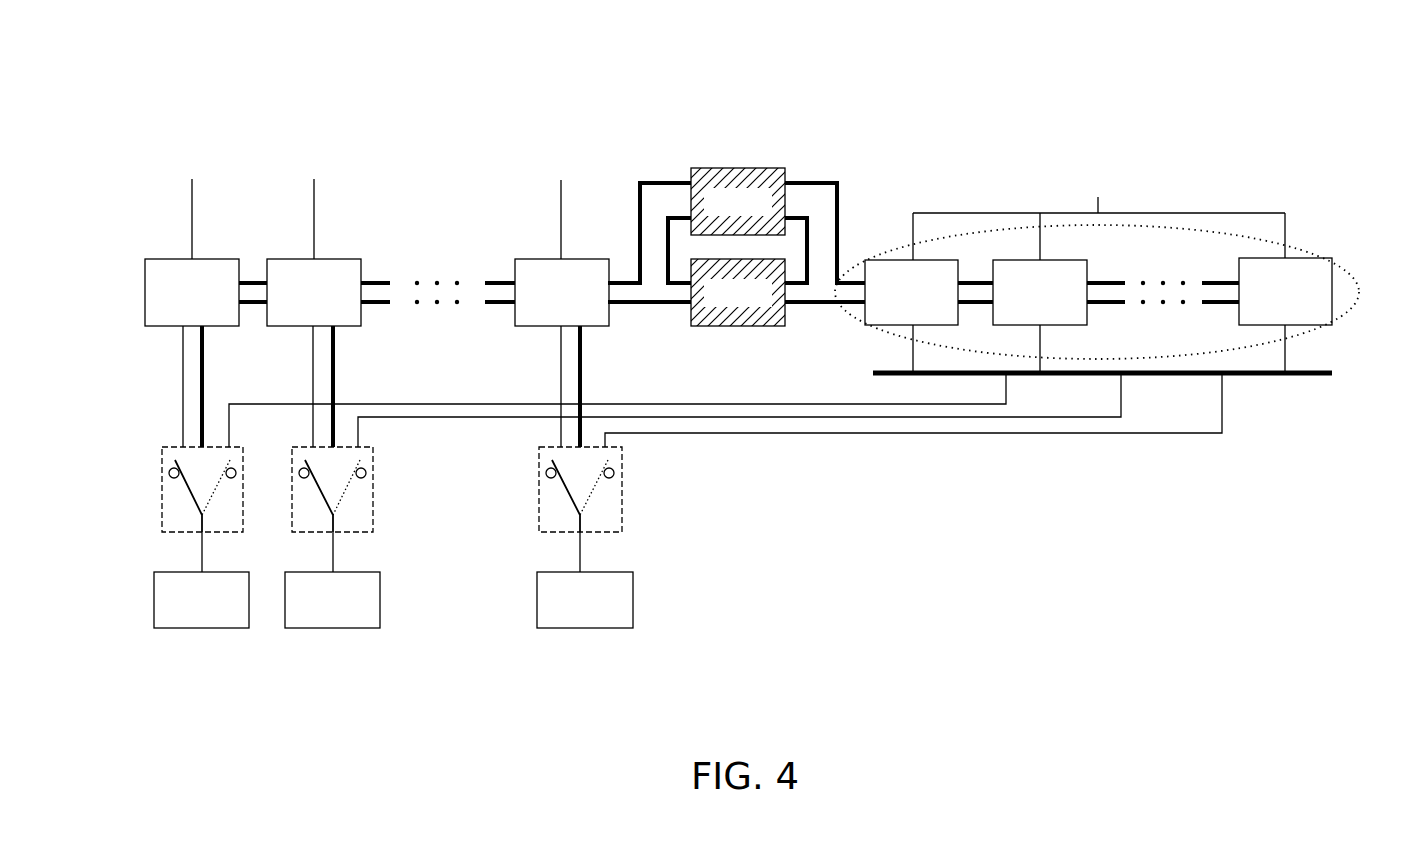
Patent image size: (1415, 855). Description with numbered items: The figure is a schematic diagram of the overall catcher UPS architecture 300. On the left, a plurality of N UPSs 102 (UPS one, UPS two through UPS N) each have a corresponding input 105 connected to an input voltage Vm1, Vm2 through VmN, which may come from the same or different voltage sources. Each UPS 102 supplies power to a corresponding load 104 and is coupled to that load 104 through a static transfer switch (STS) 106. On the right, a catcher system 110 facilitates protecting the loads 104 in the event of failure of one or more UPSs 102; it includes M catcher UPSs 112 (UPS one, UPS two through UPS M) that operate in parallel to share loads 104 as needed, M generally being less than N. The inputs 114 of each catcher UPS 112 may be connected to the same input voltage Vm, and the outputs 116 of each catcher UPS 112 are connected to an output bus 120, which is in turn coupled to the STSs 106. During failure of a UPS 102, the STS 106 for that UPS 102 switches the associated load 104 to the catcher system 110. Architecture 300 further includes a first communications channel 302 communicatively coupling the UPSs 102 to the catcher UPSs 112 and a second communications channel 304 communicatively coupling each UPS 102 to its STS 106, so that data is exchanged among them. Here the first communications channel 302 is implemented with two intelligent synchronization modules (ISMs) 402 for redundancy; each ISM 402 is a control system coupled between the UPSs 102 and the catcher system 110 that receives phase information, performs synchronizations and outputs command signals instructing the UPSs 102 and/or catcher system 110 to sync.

The catcher UPS architecture 300 is at (1193, 80).
The UPS 102 is at (145, 289).
The load 104 is at (203, 628).
The input 105 is at (192, 220).
The static transfer switch (STS) 106 is at (162, 515).
The catcher system 110 is at (1313, 190).
The catcher UPS 112 is at (938, 260).
The input 114 is at (913, 230).
The output 116 is at (913, 358).
The output bus 120 is at (1261, 376).
The first communications channel 302 is at (650, 304).
The second communications channel 304 is at (202, 383).
The intelligent synchronization module (ISM) 402 is at (733, 168).